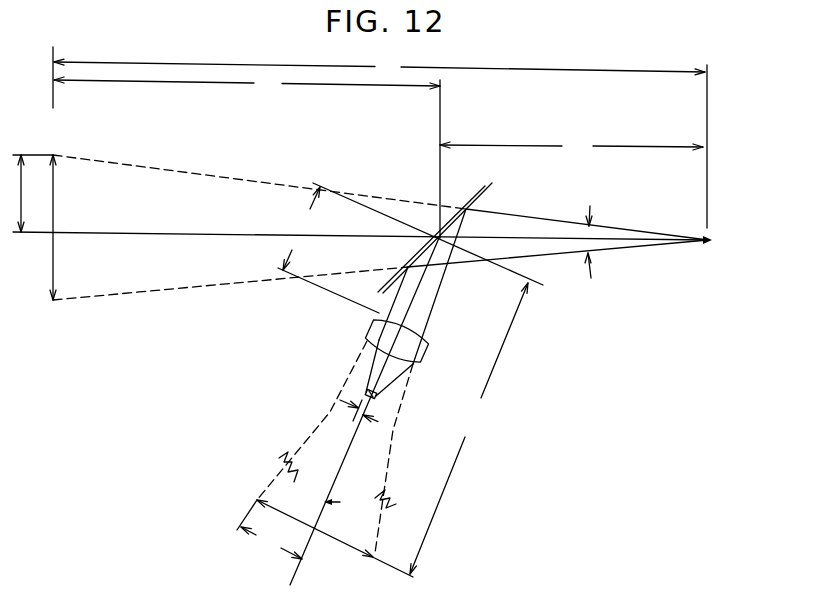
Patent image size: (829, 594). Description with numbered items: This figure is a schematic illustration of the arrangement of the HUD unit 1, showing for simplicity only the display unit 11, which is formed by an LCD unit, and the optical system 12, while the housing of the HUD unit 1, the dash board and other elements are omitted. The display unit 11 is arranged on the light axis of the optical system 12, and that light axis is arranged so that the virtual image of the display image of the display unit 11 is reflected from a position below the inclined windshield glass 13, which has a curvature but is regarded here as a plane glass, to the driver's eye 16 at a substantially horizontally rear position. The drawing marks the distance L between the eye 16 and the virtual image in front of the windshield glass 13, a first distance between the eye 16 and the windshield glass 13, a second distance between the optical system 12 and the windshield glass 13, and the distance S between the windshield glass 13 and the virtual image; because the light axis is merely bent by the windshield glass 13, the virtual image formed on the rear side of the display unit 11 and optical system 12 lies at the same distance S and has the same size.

The HUD unit 1 is at (400, 181).
The display unit 11 is at (377, 397).
The optical system 12 is at (425, 356).
The windshield glass 13 is at (489, 190).
The eye 16 is at (703, 247).